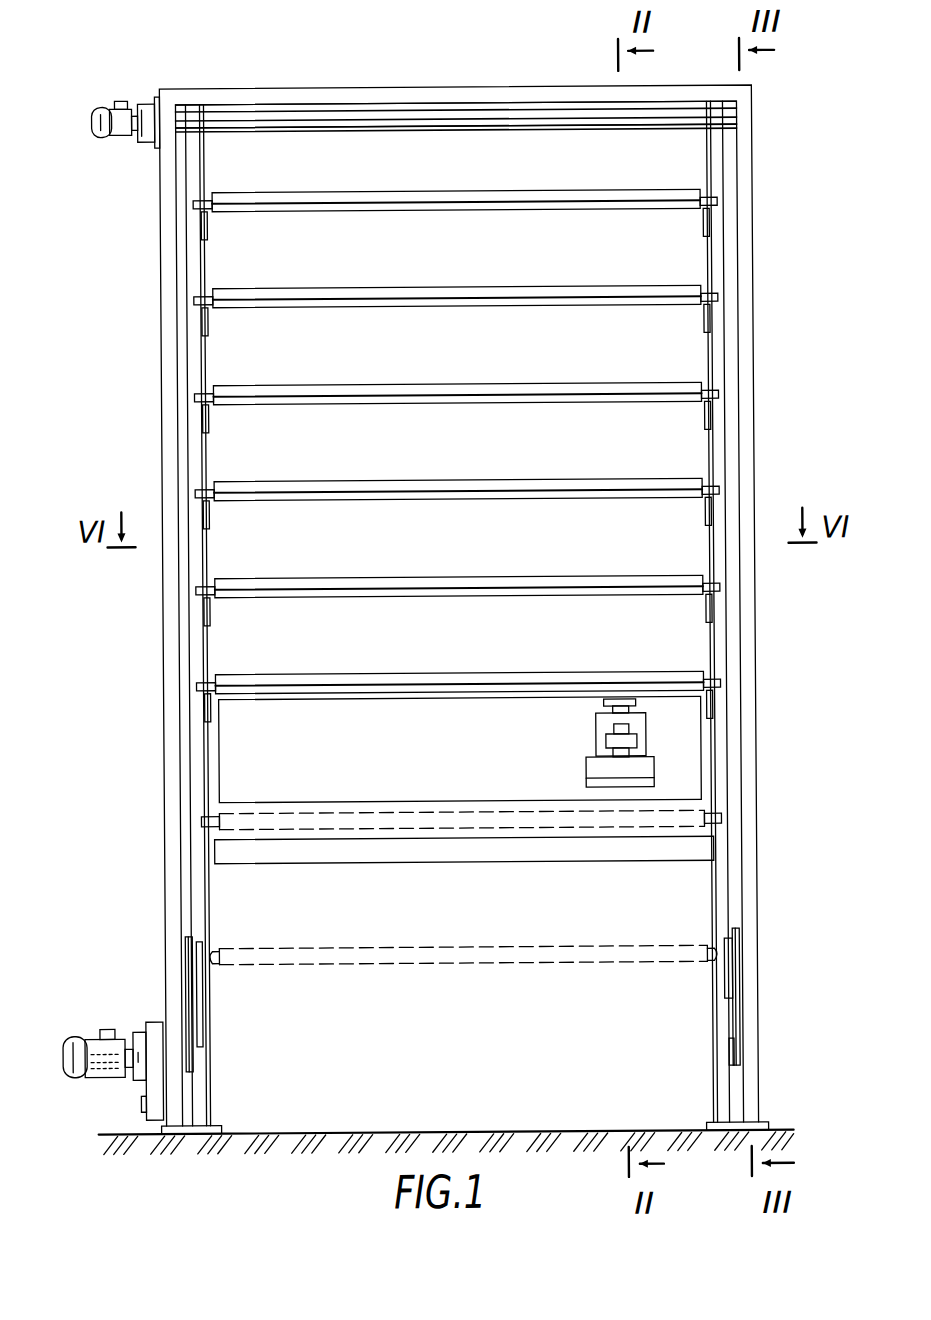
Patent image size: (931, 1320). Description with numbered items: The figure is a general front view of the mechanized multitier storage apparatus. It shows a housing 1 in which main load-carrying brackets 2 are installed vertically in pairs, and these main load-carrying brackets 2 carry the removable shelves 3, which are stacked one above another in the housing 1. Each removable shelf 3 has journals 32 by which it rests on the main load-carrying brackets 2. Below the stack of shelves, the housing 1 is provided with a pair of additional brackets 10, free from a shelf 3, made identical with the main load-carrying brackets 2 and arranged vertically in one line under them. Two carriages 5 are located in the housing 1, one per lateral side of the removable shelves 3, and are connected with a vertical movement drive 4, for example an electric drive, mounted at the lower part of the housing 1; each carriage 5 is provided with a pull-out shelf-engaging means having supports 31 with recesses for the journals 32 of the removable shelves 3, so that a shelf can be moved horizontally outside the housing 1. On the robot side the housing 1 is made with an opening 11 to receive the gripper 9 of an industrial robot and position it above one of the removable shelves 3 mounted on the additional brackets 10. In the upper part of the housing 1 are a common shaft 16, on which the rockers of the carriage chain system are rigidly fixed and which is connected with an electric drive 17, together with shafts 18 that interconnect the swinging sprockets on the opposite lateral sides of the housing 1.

The housing 1 is at (747, 310).
The main load-carrying brackets 2 is at (706, 420).
The removable shelves 3 is at (641, 387).
The vertical movement drive 4 is at (92, 1040).
The carriages 5 is at (185, 968).
The gripper 9 is at (637, 735).
The additional brackets 10 is at (213, 855).
The opening 11 is at (233, 740).
The common shaft 16 is at (392, 112).
The electric drive 17 is at (103, 142).
The shafts 18 is at (472, 122).
The supports 31 is at (213, 966).
The journals 32 is at (713, 385).